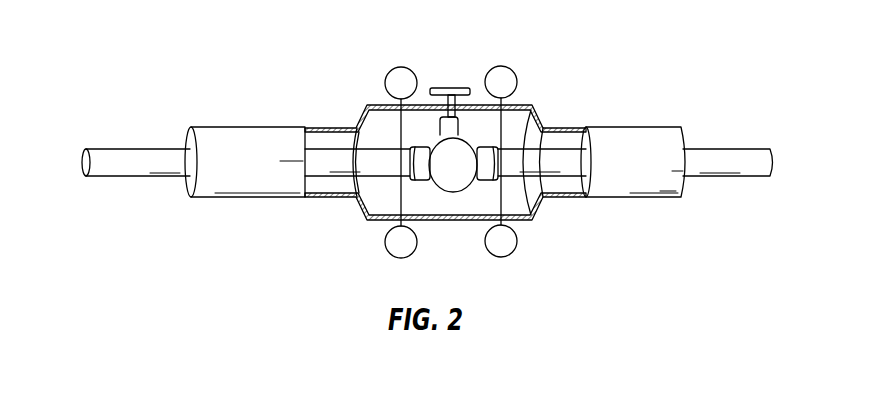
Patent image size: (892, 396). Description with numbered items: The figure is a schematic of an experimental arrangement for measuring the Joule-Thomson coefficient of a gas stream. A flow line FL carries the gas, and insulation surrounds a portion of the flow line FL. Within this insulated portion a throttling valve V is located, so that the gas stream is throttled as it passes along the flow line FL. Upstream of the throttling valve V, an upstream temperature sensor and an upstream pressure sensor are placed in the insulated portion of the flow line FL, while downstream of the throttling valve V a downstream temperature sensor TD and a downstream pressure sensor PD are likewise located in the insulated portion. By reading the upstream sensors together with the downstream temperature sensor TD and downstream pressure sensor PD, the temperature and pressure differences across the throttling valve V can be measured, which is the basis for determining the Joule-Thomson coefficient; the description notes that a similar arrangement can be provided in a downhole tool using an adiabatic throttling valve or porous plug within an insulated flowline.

The flow line FL is at (140, 162).
The throttling valve V is at (450, 147).
The downstream temperature sensor TD is at (501, 66).
The downstream pressure sensor PD is at (501, 257).